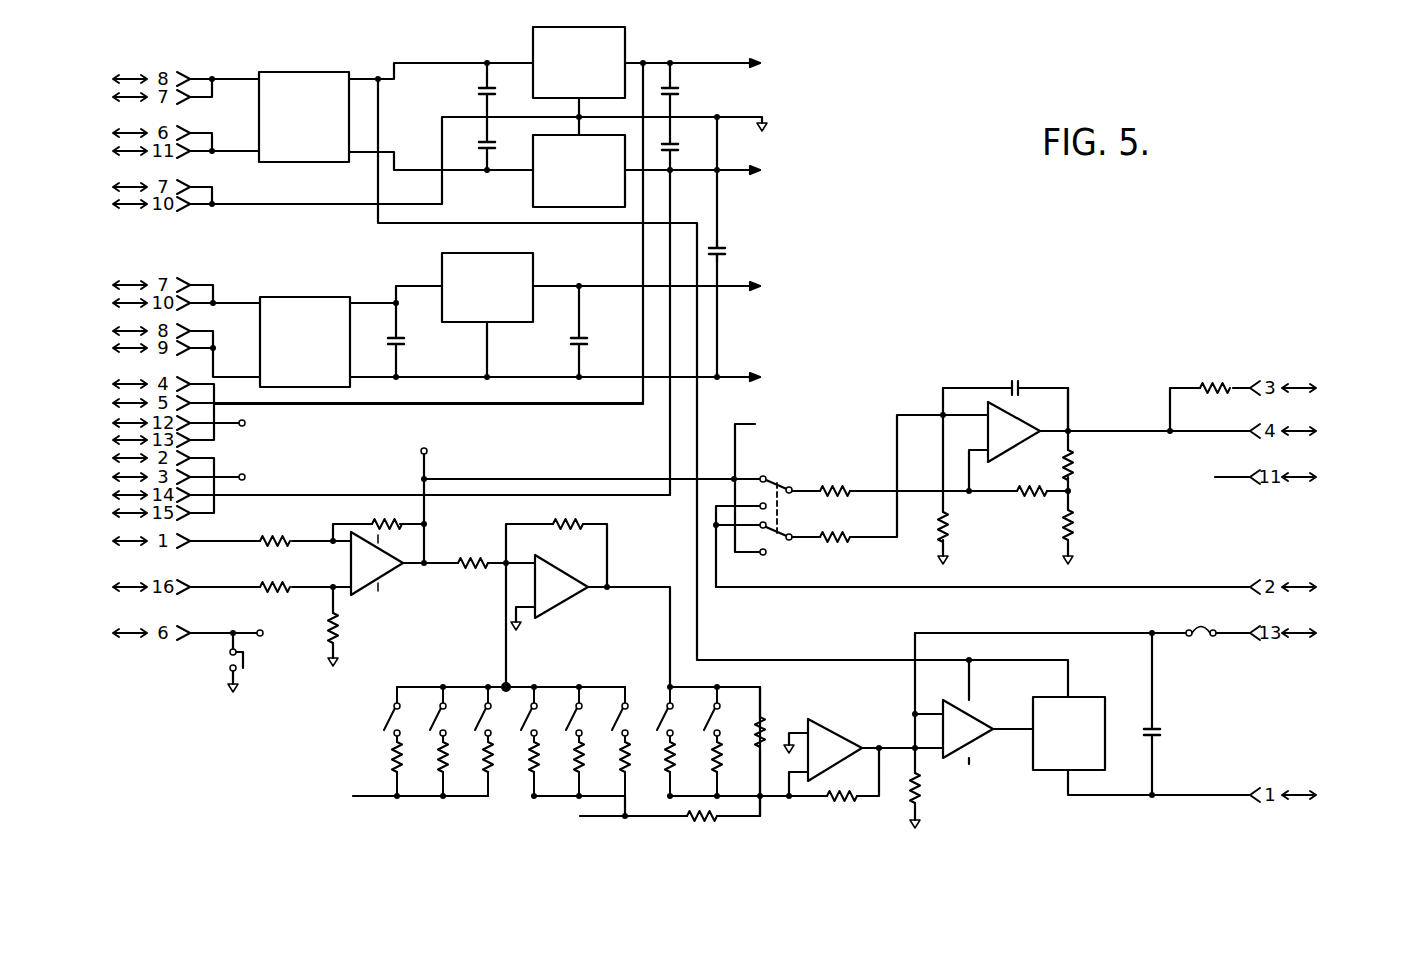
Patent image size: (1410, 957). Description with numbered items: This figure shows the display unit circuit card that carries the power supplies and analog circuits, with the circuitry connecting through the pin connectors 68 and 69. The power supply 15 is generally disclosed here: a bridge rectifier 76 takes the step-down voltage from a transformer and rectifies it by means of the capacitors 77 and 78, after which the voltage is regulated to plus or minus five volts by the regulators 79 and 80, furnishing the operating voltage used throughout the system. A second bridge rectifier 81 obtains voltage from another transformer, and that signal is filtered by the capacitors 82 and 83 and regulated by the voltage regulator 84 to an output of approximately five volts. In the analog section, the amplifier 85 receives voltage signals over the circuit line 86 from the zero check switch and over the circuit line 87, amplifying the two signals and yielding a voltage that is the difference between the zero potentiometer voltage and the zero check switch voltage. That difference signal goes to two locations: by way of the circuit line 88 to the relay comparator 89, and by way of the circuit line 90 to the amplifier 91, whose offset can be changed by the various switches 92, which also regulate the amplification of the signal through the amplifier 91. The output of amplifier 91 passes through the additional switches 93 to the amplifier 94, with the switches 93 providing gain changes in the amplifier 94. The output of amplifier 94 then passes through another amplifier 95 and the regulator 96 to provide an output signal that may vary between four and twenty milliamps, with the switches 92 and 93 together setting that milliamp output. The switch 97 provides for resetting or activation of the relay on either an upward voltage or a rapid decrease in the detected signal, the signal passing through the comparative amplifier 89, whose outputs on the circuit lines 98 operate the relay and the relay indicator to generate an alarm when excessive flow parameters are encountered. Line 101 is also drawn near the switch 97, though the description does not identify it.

The power supply 15 is at (752, 251).
The pin connector 68 is at (96, 301).
The pin connector 69 is at (1330, 648).
The bridge rectifier 76 is at (291, 138).
The capacitor 77 is at (485, 86).
The capacitor 78 is at (497, 127).
The regulator 79 is at (566, 79).
The regulator 80 is at (566, 186).
The bridge rectifier 81 is at (292, 357).
The capacitor 82 is at (400, 346).
The capacitor 83 is at (583, 346).
The voltage regulator 84 is at (474, 302).
The amplifier 85 is at (370, 586).
The circuit line 86 is at (226, 540).
The circuit line 87 is at (220, 586).
The circuit line 88 is at (545, 479).
The relay comparator 89 is at (1033, 373).
The circuit line 90 is at (440, 562).
The amplifier 91 is at (567, 600).
The switches 92 is at (470, 822).
The switches 93 is at (738, 832).
The amplifier 94 is at (833, 730).
The amplifier 95 is at (950, 758).
The regulator 96 is at (1058, 771).
The switch 97 is at (778, 470).
The circuit lines 98 is at (1338, 448).
The control line 101 is at (757, 422).